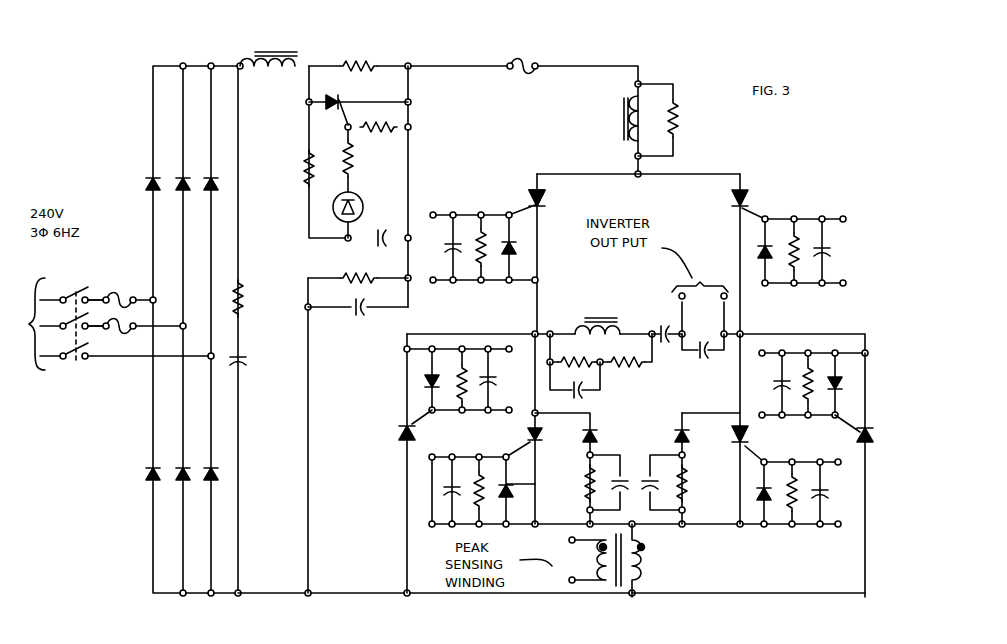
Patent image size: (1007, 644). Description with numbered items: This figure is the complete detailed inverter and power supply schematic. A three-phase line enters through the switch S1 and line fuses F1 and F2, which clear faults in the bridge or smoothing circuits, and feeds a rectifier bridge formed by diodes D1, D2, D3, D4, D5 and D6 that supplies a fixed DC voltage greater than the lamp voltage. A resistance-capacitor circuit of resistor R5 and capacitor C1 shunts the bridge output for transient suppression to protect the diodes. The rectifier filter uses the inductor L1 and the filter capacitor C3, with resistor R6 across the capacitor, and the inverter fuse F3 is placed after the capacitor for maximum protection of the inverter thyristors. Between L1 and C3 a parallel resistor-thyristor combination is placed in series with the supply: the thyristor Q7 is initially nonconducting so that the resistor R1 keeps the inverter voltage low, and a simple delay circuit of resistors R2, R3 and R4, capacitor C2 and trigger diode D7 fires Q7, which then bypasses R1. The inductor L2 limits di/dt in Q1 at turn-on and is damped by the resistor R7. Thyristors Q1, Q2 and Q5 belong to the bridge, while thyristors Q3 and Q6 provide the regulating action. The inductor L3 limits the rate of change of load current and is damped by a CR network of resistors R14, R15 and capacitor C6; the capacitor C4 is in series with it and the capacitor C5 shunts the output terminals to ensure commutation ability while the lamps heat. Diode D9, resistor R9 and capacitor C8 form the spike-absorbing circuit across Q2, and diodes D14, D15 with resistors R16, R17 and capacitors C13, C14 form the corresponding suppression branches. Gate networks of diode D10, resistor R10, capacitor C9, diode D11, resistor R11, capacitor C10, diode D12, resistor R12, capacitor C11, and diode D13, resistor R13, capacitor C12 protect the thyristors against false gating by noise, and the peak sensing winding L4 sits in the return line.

The switch S1 is at (78, 362).
The line fuse F1 is at (120, 294).
The line fuse F2 is at (120, 332).
The inverter fuse F3 is at (532, 62).
The rectifier diode D1 is at (152, 181).
The rectifier diode D2 is at (172, 180).
The rectifier diode D3 is at (218, 182).
The rectifier diode D4 is at (150, 473).
The rectifier diode D5 is at (172, 468).
The rectifier diode D6 is at (218, 470).
The inductor L1 is at (246, 50).
The resistor R1 is at (346, 62).
The resistor R2 is at (396, 127).
The resistor R3 is at (356, 156).
The resistor R4 is at (302, 166).
The resistor R5 is at (244, 289).
The resistor R6 is at (328, 290).
The resistor R7 is at (674, 116).
The thyristor Q7 is at (318, 87).
The trigger diode D7 is at (362, 204).
The capacitor C1 is at (272, 342).
The capacitor C2 is at (370, 246).
The filter capacitor C3 is at (362, 320).
The inductor L2 is at (624, 126).
The thyristor Q1 is at (528, 192).
The thyristor Q2 is at (738, 196).
The diode D9 is at (756, 250).
The resistor R9 is at (798, 230).
The capacitor C8 is at (830, 250).
The inductor L3 is at (578, 320).
The capacitor C4 is at (660, 328).
The capacitor C5 is at (716, 360).
The resistor R14 is at (573, 356).
The resistor R15 is at (624, 368).
The capacitor C6 is at (584, 394).
The capacitor C10 is at (774, 386).
The resistor R11 is at (804, 370).
The diode D11 is at (838, 386).
The thyristor Q6 is at (858, 438).
The diode D10 is at (426, 382).
The resistor R10 is at (462, 400).
The capacitor C9 is at (492, 384).
The thyristor Q3 is at (399, 430).
The capacitor C11 is at (442, 488).
The resistor R12 is at (482, 478).
The diode D12 is at (522, 492).
The diode D14 is at (540, 430).
The resistor R16 is at (586, 484).
The capacitor C13 is at (622, 476).
The capacitor C14 is at (650, 474).
The diode D15 is at (686, 434).
The resistor R17 is at (686, 482).
The thyristor Q5 is at (744, 440).
The diode D13 is at (756, 498).
The resistor R13 is at (780, 468).
The capacitor C12 is at (834, 494).
The peak sensing winding L4 is at (648, 560).